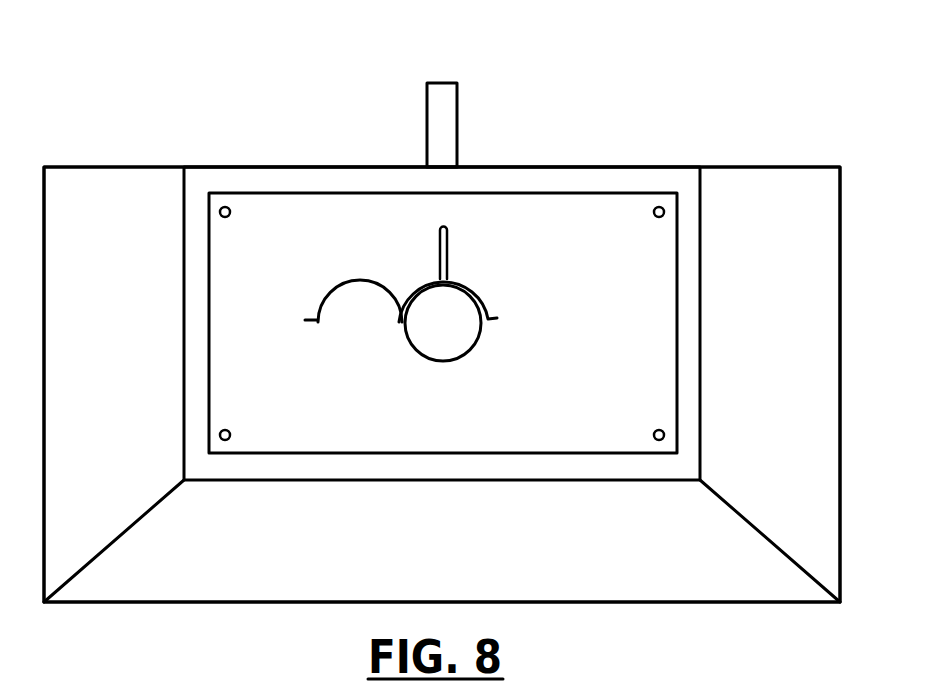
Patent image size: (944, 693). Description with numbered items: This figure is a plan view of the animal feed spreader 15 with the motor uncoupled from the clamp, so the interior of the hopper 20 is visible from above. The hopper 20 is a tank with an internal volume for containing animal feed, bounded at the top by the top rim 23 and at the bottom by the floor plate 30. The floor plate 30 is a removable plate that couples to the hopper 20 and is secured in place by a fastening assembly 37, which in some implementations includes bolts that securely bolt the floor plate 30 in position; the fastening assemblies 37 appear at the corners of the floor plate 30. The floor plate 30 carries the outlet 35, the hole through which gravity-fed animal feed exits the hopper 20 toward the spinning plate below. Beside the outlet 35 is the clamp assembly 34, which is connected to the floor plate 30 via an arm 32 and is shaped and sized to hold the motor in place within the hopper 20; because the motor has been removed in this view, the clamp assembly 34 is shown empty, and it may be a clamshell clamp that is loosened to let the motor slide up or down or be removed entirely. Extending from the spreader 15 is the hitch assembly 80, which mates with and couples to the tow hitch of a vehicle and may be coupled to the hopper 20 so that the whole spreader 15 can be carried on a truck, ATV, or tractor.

The animal feed spreader 15 is at (815, 109).
The hopper 20 is at (212, 553).
The top rim 23 is at (144, 167).
The floor plate 30 is at (604, 339).
The arm 32 is at (447, 262).
The clamp assembly 34 is at (350, 283).
The outlet 35 is at (468, 352).
The fastening assembly 37 is at (223, 207).
The hitch assembly 80 is at (450, 123).